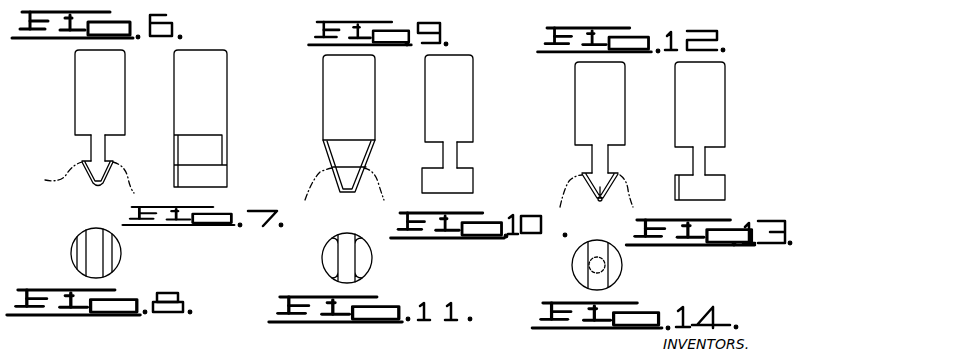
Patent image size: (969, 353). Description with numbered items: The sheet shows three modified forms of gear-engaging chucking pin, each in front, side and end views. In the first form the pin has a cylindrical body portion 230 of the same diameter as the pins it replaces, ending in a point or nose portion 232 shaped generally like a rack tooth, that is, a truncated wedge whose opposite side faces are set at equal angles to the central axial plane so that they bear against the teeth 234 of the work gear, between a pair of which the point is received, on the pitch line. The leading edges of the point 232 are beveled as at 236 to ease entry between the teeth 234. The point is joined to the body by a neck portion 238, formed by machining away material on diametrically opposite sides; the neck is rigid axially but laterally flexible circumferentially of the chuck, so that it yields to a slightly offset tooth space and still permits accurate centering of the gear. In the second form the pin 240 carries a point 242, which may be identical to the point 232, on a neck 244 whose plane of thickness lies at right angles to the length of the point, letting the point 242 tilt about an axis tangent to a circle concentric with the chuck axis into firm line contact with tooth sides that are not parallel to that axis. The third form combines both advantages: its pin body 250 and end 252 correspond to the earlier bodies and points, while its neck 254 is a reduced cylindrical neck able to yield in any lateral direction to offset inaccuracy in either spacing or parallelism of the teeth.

In FIG. 6, the cylindrical body portion 230 is at (108, 99).
In FIG. 7, the cylindrical body portion 230 is at (208, 99).
In FIG. 8, the cylindrical body portion 230 is at (121, 257).
In FIG. 6, the point or nose portion 232 is at (97, 178).
In FIG. 7, the point or nose portion 232 is at (213, 176).
In FIG. 8, the point or nose portion 232 is at (95, 251).
In FIG. 6, the teeth 234 is at (64, 183).
In FIG. 6, the bevel 236 is at (128, 191).
In FIG. 7, the bevel 236 is at (174, 172).
In FIG. 6, the neck portion 238 is at (98, 145).
In FIG. 9, the pin 240 is at (358, 99).
In FIG. 10, the pin 240 is at (460, 99).
In FIG. 11, the pin 240 is at (372, 262).
In FIG. 9, the point 242 is at (341, 194).
In FIG. 10, the point 242 is at (452, 187).
In FIG. 11, the point 242 is at (343, 262).
In FIG. 9, the neck 244 is at (371, 152).
In FIG. 10, the neck 244 is at (459, 155).
In FIG. 12, the pin body 250 is at (608, 99).
In FIG. 13, the pin body 250 is at (708, 99).
In FIG. 14, the pin body 250 is at (623, 267).
In FIG. 12, the end 252 is at (600, 200).
In FIG. 13, the end 252 is at (715, 192).
In FIG. 14, the end 252 is at (589, 264).
In FIG. 12, the neck 254 is at (593, 160).
In FIG. 13, the neck 254 is at (702, 161).